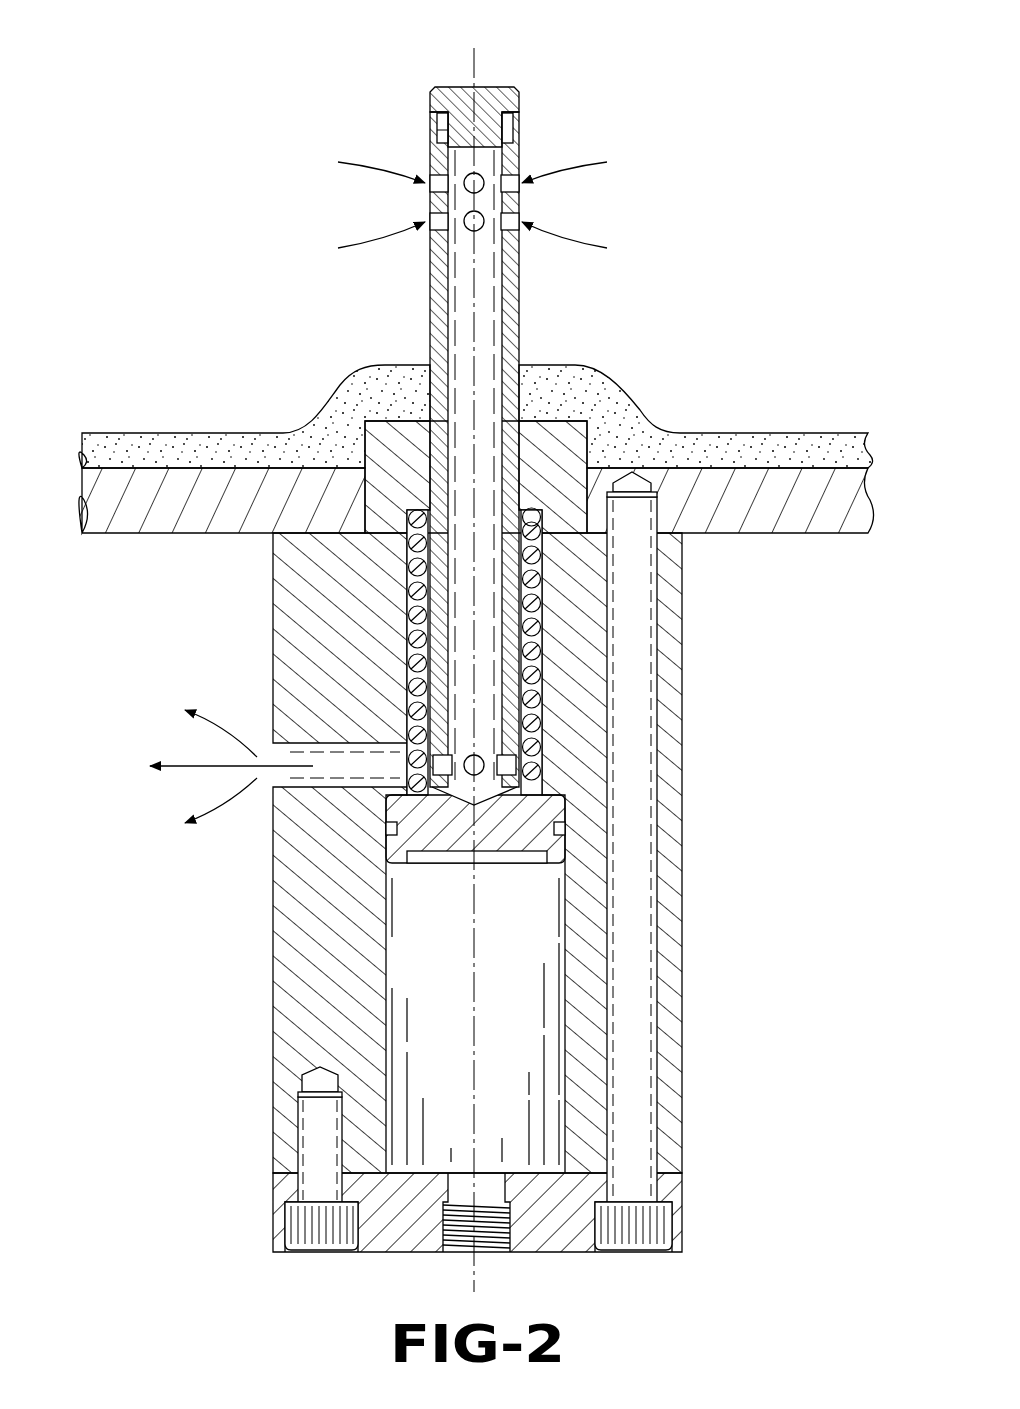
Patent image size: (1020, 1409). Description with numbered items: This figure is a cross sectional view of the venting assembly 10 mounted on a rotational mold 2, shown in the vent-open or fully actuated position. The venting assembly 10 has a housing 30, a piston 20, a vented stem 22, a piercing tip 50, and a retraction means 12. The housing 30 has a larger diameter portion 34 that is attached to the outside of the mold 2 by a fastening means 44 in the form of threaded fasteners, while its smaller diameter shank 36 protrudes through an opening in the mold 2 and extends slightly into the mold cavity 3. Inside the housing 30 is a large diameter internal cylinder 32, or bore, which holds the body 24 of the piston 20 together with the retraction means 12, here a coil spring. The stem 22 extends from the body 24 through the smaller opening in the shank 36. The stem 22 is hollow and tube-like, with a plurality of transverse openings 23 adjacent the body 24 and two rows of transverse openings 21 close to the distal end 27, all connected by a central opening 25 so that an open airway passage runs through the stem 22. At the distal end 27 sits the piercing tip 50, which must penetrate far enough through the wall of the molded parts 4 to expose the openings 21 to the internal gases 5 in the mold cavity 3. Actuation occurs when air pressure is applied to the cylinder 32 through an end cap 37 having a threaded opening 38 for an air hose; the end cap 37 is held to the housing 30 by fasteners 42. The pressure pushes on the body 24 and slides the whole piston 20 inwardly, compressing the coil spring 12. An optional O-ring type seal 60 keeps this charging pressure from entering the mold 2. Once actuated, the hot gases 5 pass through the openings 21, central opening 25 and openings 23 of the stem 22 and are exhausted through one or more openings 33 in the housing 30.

The mold 2 is at (790, 512).
The mold cavity 3 is at (655, 150).
The molded parts 4 is at (728, 438).
The internal gases 5 is at (338, 248).
The venting assembly 10 is at (300, 118).
The retraction means 12 is at (545, 585).
The piston 20 is at (425, 305).
The openings 21 is at (505, 178).
The stem 22 is at (510, 345).
The openings 23 is at (548, 770).
The body 24 is at (500, 848).
The central opening 25 is at (483, 330).
The distal end 27 is at (433, 132).
The housing 30 is at (268, 1060).
The internal cylinder 32 is at (386, 948).
The openings 33 is at (347, 765).
The larger diameter portion 34 is at (300, 588).
The shank 36 is at (398, 436).
The end cap 37 is at (385, 1215).
The threaded opening 38 is at (468, 1240).
The fasteners 42 is at (313, 1232).
The fastening means 44 is at (640, 1235).
The piercing tip 50 is at (452, 95).
The O-ring type seal 60 is at (560, 826).